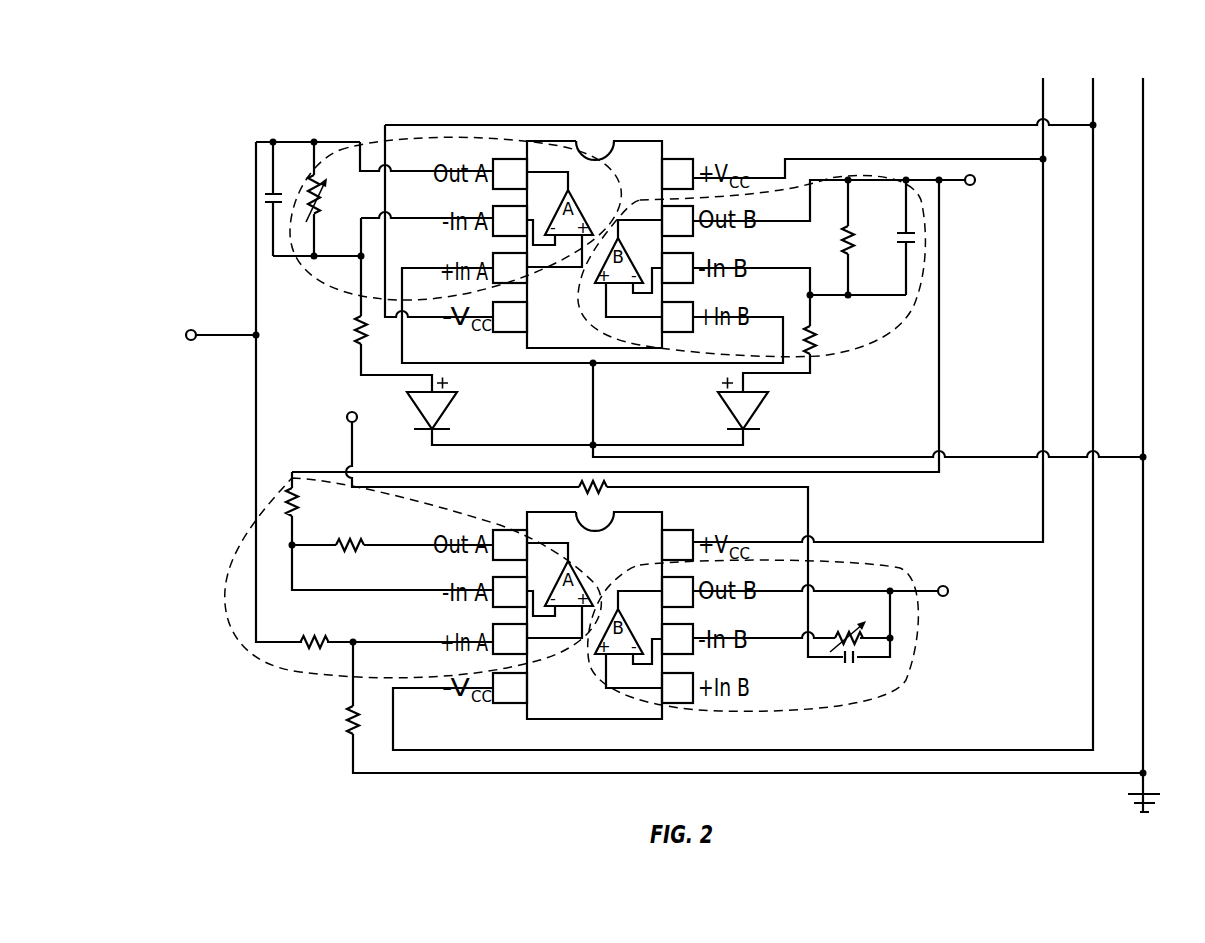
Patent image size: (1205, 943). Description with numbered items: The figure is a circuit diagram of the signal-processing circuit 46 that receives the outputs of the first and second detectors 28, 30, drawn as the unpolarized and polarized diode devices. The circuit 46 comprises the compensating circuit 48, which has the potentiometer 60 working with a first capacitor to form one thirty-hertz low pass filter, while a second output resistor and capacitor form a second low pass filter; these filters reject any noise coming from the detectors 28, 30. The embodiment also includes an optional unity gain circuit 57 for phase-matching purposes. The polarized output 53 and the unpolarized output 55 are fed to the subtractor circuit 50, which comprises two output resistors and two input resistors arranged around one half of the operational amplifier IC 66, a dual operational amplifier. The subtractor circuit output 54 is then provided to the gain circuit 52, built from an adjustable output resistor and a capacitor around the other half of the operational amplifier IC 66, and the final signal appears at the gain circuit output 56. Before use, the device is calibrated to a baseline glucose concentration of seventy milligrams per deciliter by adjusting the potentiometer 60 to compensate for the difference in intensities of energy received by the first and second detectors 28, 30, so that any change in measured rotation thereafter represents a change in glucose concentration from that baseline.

The circuit 46 is at (195, 90).
The compensating circuit 48 is at (373, 143).
The potentiometer 60 is at (322, 196).
The polarized output 53 is at (187, 331).
The subtractor circuit output 54 is at (348, 413).
The second detector 30 is at (416, 412).
The first detector 28 is at (721, 404).
The unpolarized output 55 is at (975, 185).
The unity gain circuit 57 is at (858, 353).
The subtractor circuit 50 is at (228, 592).
The operational amplifier IC 66 is at (622, 556).
The gain circuit 52 is at (857, 698).
The gain circuit output 56 is at (946, 596).